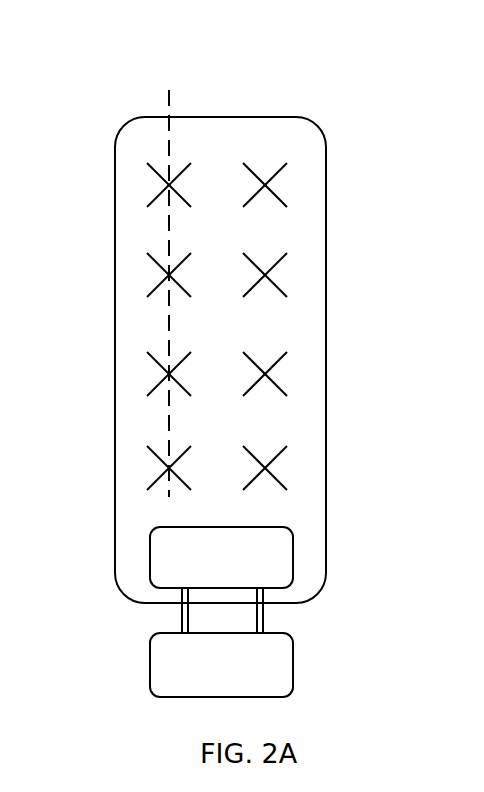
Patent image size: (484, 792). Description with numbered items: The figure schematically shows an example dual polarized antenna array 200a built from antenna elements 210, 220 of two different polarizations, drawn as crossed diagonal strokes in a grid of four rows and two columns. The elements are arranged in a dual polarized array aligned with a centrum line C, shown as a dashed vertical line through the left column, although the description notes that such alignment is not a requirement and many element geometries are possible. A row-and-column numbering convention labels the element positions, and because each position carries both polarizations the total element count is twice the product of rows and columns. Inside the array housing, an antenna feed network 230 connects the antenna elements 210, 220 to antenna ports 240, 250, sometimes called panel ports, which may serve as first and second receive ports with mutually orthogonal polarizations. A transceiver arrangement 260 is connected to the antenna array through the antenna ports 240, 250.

The dual polarized antenna array 200a is at (111, 82).
The centrum line C is at (167, 279).
The antenna element 210 is at (305, 160).
The antenna element 220 is at (303, 196).
The antenna feed network 230 is at (221, 557).
The antenna port 240 is at (177, 613).
The antenna port 250 is at (268, 613).
The transceiver arrangement 260 is at (221, 665).